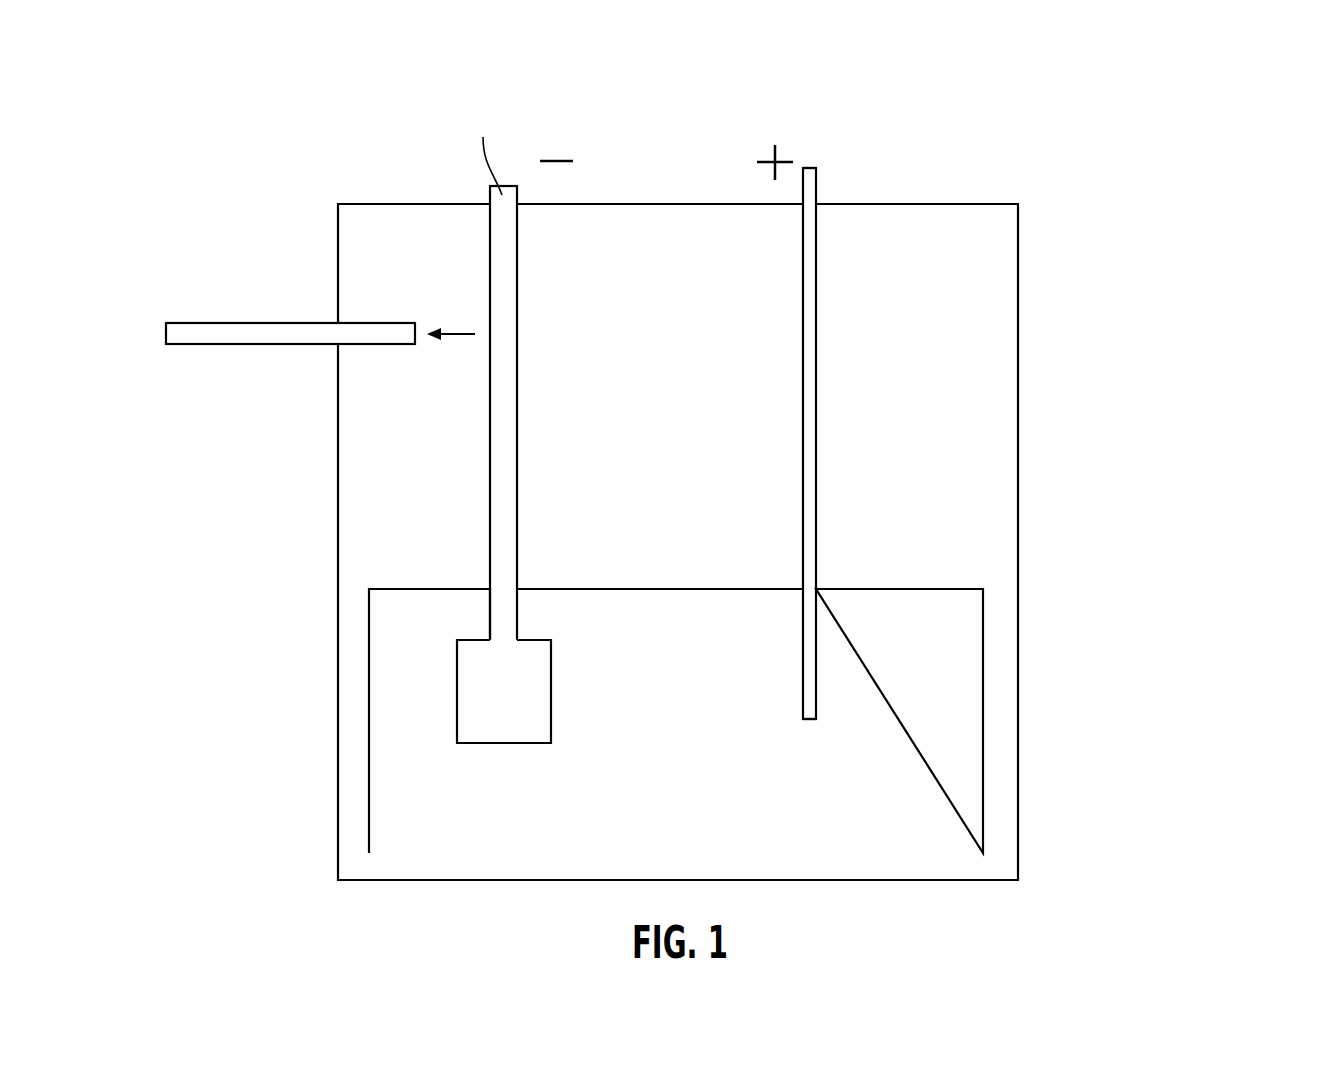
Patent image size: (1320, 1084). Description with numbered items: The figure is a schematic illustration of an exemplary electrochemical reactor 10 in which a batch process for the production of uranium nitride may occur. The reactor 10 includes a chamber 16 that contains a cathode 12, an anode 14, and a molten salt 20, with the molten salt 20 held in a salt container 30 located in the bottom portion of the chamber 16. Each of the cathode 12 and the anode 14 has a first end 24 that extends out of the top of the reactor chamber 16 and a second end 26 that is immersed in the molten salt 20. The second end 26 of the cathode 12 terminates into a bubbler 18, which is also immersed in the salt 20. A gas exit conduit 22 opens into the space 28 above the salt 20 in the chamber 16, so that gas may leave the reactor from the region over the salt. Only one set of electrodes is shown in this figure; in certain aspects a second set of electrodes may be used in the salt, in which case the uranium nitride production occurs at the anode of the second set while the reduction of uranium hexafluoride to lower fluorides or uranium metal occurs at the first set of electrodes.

The reactor 10 is at (1236, 113).
The cathode 12 is at (518, 328).
The anode 14 is at (818, 330).
The chamber 16 is at (1020, 328).
The bubbler 18 is at (455, 692).
The molten salt 20 is at (680, 704).
The gas exit conduit 22 is at (202, 346).
The first end 24 is at (508, 187).
The second end 26 is at (487, 598).
The space 28 is at (680, 400).
The salt container 30 is at (892, 598).